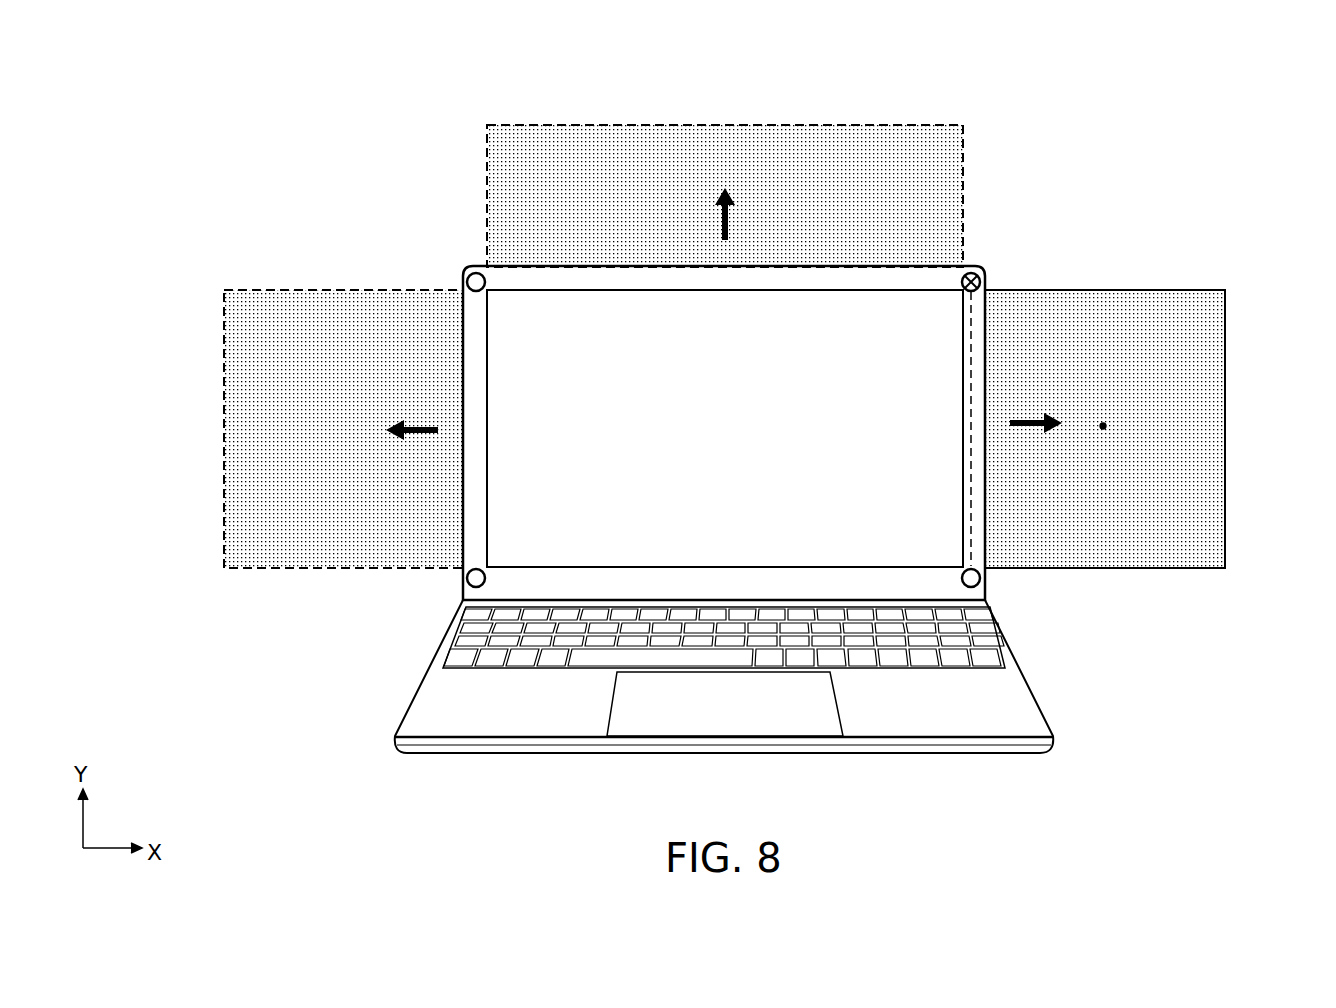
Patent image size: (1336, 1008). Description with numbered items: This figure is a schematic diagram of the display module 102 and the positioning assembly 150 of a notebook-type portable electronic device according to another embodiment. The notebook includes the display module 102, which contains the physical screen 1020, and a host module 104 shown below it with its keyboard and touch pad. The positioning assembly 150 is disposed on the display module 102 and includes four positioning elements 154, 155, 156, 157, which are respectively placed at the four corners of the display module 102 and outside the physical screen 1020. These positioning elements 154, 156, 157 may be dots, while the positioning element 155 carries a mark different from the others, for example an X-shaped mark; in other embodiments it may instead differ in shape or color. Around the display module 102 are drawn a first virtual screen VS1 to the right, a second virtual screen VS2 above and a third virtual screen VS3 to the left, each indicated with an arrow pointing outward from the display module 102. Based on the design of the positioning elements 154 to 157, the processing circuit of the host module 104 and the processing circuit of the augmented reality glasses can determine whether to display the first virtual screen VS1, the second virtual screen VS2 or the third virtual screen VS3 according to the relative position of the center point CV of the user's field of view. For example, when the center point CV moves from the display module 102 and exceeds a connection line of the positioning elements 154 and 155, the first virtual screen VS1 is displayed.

The display module 102 is at (986, 316).
The physical screen 1020 is at (543, 330).
The host module 104 is at (432, 708).
The positioning assembly 150 is at (1290, 54).
The positioning element 154 is at (982, 578).
The positioning element 155 is at (983, 284).
The positioning element 156 is at (466, 282).
The positioning element 157 is at (466, 578).
The first virtual screen VS1 is at (1185, 290).
The second virtual screen VS2 is at (935, 126).
The third virtual screen VS3 is at (262, 290).
The center point CV is at (1106, 426).